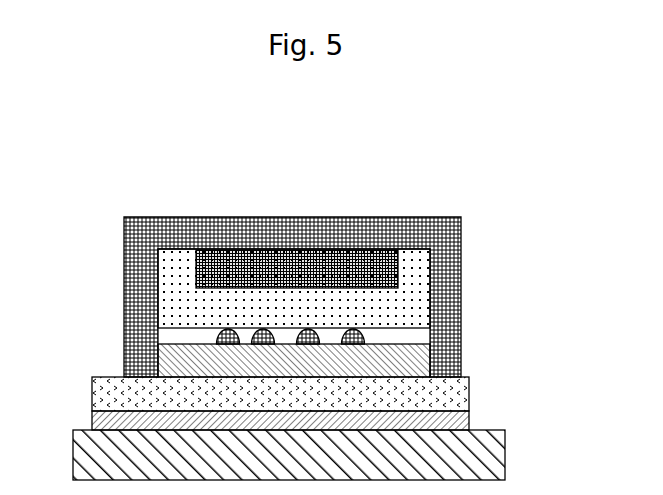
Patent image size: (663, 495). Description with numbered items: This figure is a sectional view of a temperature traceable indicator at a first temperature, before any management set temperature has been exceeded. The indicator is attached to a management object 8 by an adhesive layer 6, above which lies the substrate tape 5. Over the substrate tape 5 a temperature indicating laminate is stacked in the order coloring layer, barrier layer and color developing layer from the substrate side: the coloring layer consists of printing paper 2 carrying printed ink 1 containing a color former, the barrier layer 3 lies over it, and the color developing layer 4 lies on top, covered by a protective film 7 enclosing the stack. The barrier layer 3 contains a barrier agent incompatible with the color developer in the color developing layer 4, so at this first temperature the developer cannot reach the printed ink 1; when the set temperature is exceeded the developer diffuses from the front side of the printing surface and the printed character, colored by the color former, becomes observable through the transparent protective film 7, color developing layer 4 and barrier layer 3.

The printed ink 1 is at (218, 341).
The printing paper 2 is at (448, 345).
The barrier layer 3 is at (195, 308).
The color developing layer 4 is at (398, 280).
The substrate tape 5 is at (145, 395).
The adhesive layer 6 is at (467, 420).
The protective film 7 is at (461, 238).
The management object 8 is at (490, 457).